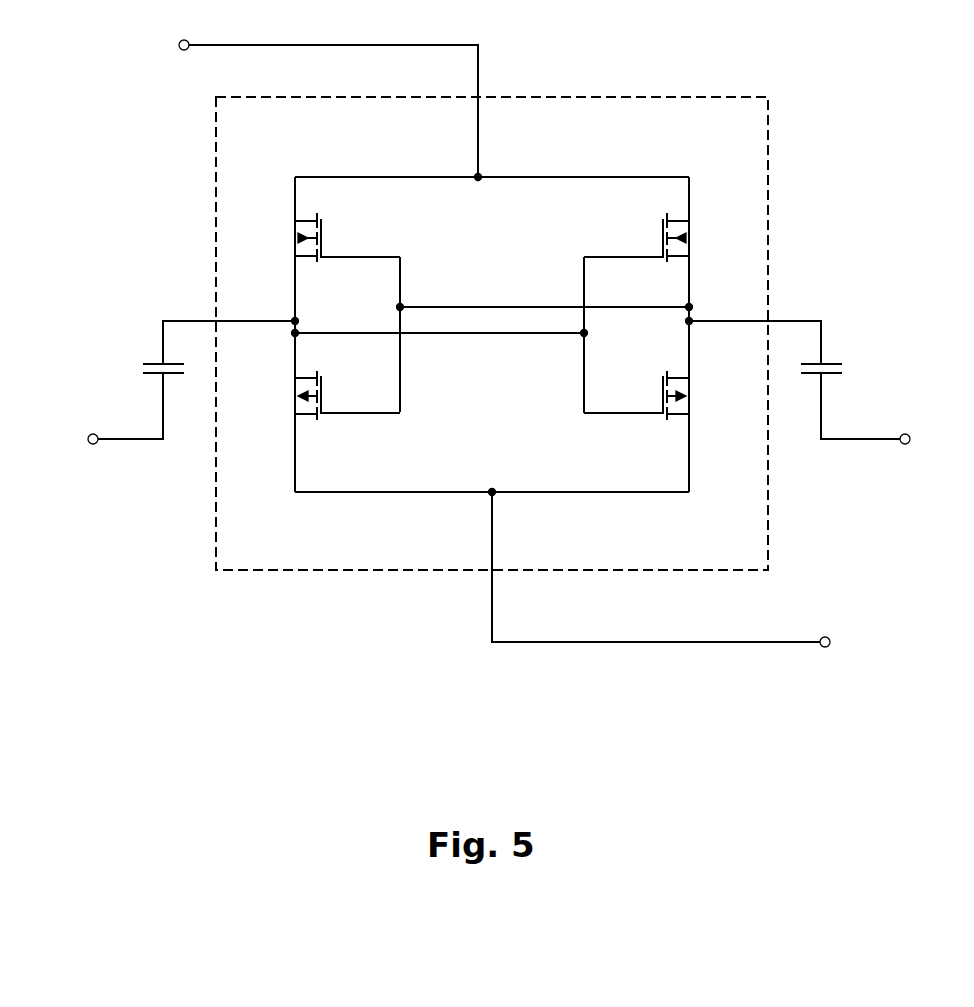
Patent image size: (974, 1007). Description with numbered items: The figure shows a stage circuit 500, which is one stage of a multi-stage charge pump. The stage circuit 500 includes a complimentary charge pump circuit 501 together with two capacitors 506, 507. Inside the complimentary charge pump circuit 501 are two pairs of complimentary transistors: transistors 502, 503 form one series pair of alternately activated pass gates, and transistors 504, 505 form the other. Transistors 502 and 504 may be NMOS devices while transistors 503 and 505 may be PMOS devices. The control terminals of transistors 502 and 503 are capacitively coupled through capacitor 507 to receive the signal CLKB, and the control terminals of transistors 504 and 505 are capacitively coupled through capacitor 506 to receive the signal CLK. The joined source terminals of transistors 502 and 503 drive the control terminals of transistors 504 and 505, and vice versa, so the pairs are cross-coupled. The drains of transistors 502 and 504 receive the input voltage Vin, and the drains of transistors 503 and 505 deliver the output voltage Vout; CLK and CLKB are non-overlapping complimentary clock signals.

The stage circuit 500 is at (499, 344).
The complimentary charge pump circuit 501 is at (638, 97).
The transistor 502 is at (327, 232).
The transistor 503 is at (327, 389).
The transistor 504 is at (697, 232).
The transistor 505 is at (697, 389).
The capacitor 506 is at (148, 357).
The capacitor 507 is at (835, 359).